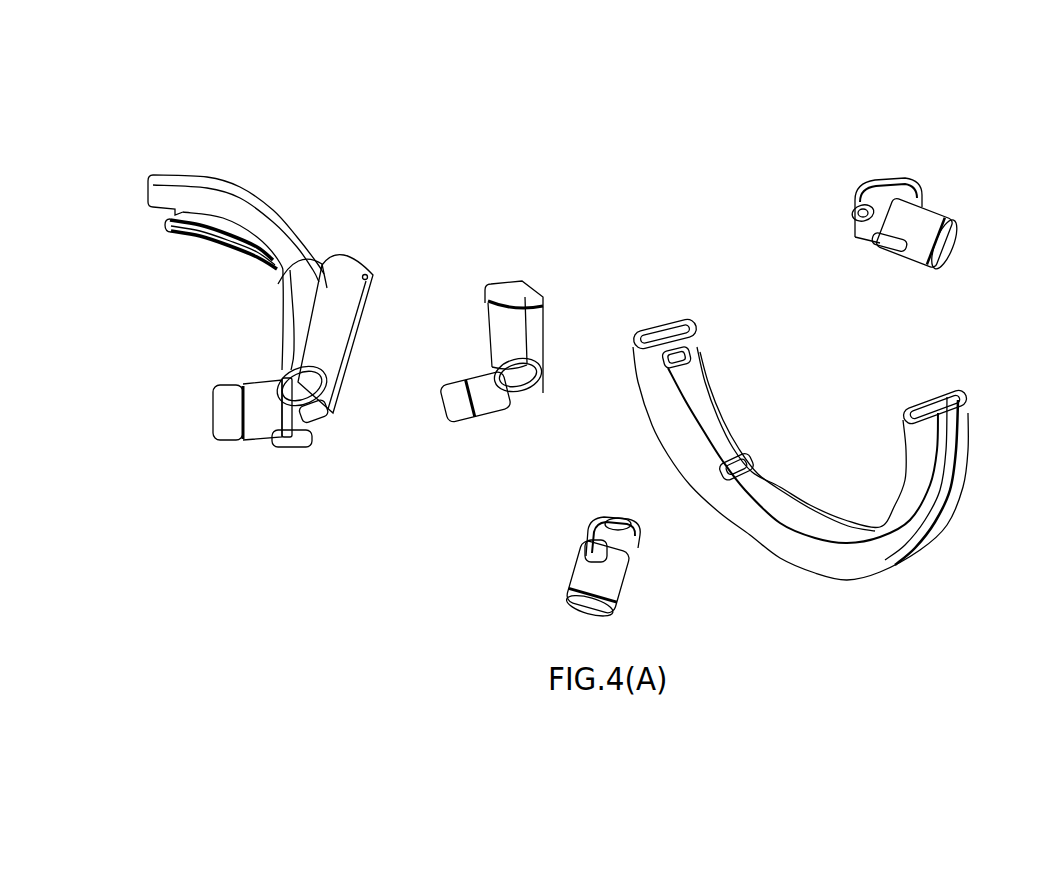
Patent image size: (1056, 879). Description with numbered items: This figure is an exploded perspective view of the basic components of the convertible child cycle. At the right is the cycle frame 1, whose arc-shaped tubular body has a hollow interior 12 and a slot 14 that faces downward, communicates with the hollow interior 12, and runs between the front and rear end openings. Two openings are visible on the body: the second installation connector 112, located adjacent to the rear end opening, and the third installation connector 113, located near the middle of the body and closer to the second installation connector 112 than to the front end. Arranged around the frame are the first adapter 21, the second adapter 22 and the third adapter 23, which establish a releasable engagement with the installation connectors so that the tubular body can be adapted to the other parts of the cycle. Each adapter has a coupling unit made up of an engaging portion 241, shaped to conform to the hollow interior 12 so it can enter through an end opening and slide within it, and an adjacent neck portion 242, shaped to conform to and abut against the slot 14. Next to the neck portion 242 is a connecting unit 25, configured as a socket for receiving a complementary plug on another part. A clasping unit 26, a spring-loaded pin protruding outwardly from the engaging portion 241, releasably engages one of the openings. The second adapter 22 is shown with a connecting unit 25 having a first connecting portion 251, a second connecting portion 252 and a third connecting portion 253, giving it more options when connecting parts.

The cycle frame 1 is at (880, 580).
The hollow interior 12 is at (922, 407).
The slot 14 is at (953, 500).
The second installation connector 112 is at (687, 350).
The third installation connector 113 is at (733, 463).
The first adapter 21 is at (873, 173).
The second adapter 22 is at (338, 239).
The third adapter 23 is at (645, 572).
The engaging portion 241 is at (293, 393).
The neck portion 242 is at (267, 433).
The connecting unit 25 is at (607, 587).
The first connecting portion 251 is at (507, 328).
The second connecting portion 252 is at (235, 413).
The third connecting portion 253 is at (263, 223).
The clasping unit 26 is at (333, 410).